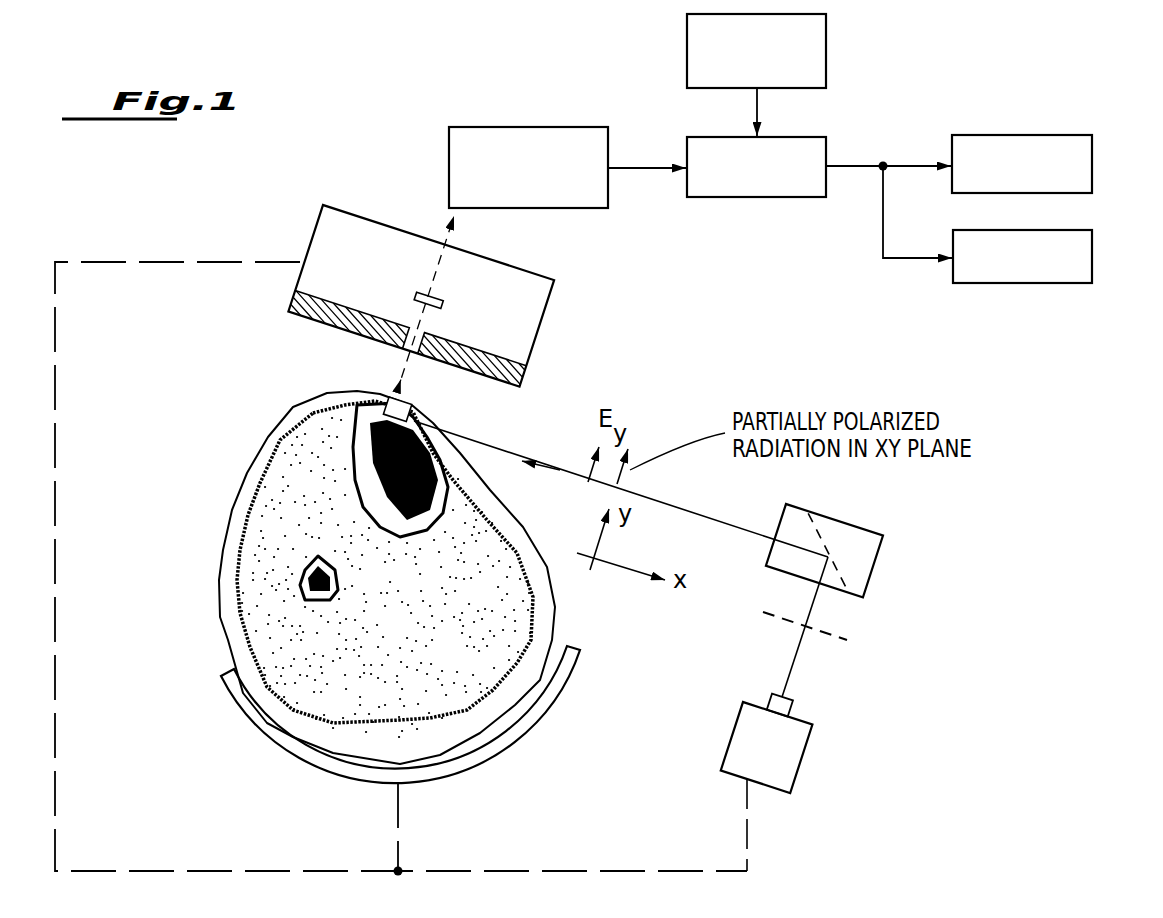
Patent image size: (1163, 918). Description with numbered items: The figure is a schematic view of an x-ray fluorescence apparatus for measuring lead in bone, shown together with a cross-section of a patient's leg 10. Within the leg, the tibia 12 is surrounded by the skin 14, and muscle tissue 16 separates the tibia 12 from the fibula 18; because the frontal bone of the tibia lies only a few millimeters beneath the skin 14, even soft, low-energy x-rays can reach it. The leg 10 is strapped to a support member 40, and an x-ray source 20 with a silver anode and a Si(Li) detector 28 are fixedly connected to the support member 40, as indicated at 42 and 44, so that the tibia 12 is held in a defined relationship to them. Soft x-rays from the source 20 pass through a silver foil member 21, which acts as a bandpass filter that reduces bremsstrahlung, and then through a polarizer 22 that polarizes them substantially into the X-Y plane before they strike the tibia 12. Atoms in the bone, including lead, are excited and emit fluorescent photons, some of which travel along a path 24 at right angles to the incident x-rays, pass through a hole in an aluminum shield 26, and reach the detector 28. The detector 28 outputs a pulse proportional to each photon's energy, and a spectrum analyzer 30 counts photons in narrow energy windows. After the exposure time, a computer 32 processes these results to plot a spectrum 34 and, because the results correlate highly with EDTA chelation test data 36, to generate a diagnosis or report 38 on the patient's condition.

The leg 10 is at (367, 562).
The tibia 12 is at (342, 405).
The skin 14 is at (250, 473).
The muscle tissue 16 is at (320, 523).
The fibula 18 is at (300, 587).
The x-ray source 20 is at (795, 754).
The silver foil member 21 is at (848, 640).
The polarizer 22 is at (861, 526).
The path 24 is at (407, 367).
The aluminum shield 26 is at (530, 371).
The Si(Li) detector 28 is at (444, 304).
The spectrum analyzer 30 is at (521, 129).
The computer 32 is at (818, 150).
The spectrum plot 34 is at (1036, 143).
The EDTA test data 36 is at (814, 58).
The report 38 is at (1083, 258).
The support member 40 is at (553, 695).
The fixed connection 42 is at (577, 871).
The fixed connection 44 is at (240, 870).